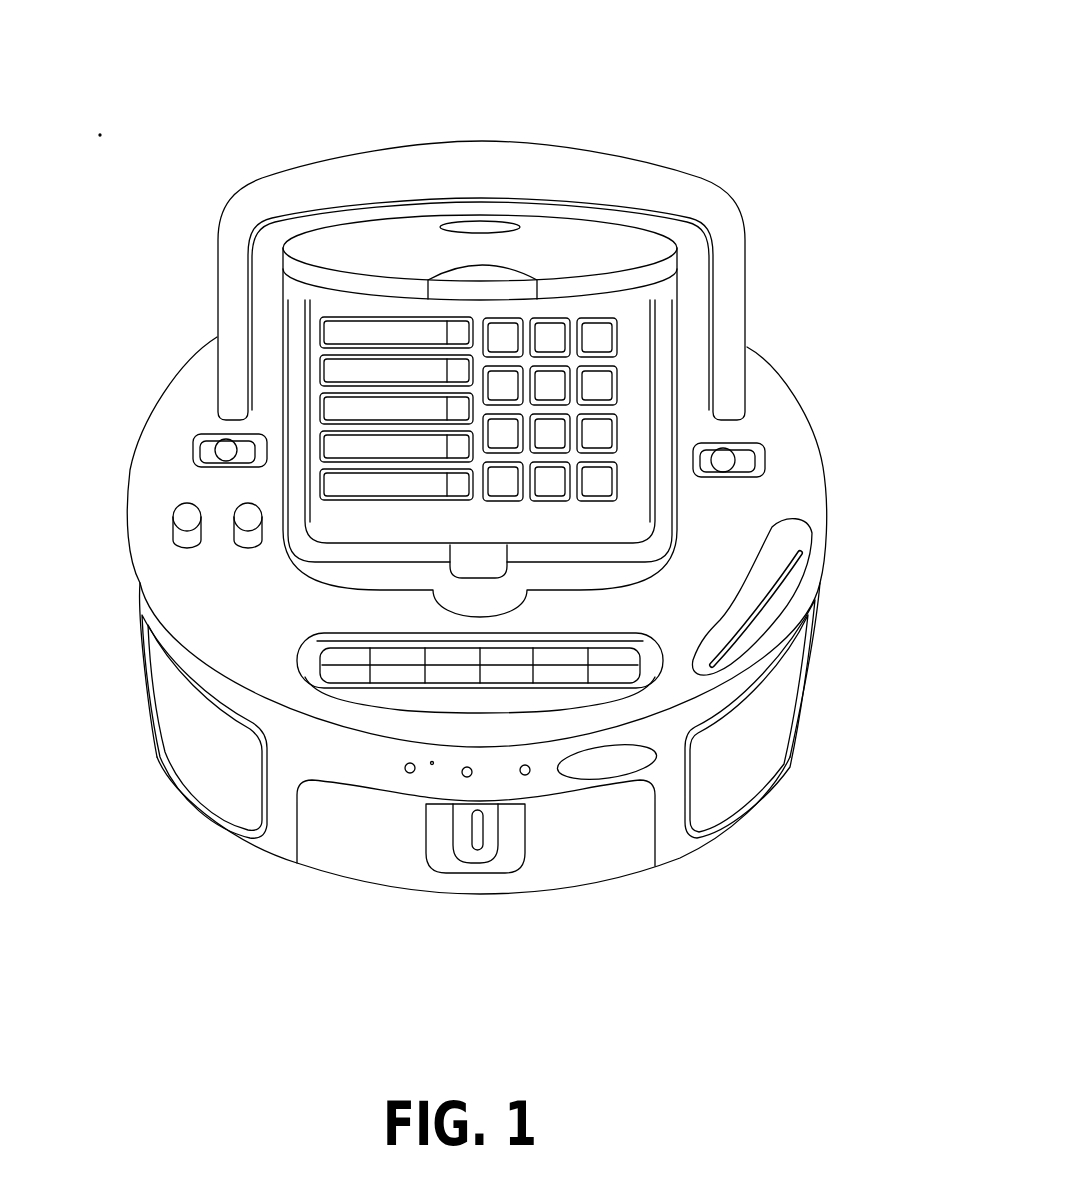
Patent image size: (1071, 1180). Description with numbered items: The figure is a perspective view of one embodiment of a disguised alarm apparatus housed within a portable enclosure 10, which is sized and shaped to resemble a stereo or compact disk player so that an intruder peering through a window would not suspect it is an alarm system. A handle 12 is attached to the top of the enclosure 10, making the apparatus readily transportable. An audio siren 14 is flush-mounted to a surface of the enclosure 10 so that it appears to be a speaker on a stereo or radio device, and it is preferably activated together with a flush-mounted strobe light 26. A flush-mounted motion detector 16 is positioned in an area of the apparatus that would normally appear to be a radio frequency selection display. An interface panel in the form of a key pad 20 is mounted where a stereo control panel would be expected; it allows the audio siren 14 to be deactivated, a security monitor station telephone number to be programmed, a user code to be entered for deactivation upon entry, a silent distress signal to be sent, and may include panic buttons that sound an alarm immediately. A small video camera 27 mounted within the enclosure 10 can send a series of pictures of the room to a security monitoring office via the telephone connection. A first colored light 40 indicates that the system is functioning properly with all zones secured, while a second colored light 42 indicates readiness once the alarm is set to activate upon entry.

The portable enclosure 10 is at (530, 117).
The handle 12 is at (747, 243).
The audio siren 14 is at (780, 705).
The motion detector 16 is at (510, 863).
The key pad 20 is at (632, 417).
The strobe light 26 is at (177, 720).
The video camera 27 is at (622, 762).
The first colored light 40 is at (410, 774).
The second colored light 42 is at (464, 777).